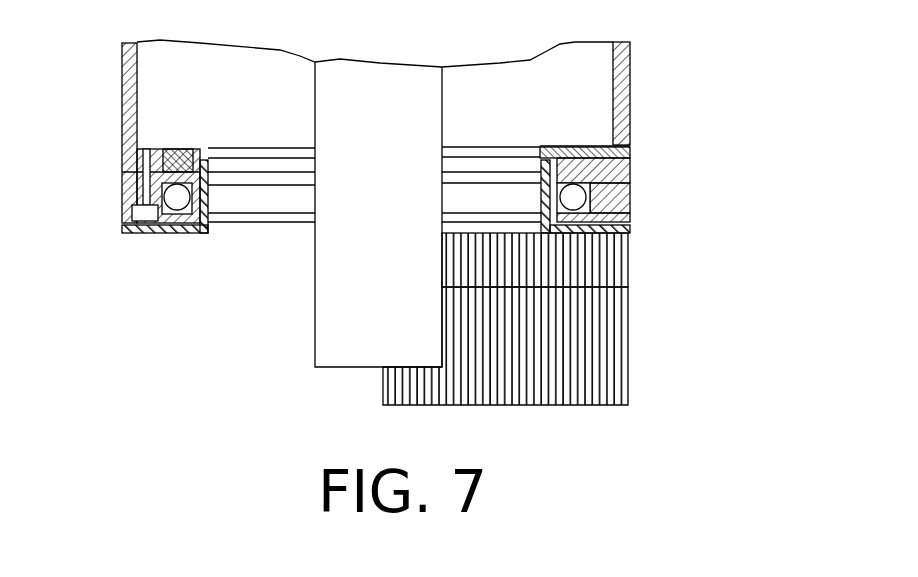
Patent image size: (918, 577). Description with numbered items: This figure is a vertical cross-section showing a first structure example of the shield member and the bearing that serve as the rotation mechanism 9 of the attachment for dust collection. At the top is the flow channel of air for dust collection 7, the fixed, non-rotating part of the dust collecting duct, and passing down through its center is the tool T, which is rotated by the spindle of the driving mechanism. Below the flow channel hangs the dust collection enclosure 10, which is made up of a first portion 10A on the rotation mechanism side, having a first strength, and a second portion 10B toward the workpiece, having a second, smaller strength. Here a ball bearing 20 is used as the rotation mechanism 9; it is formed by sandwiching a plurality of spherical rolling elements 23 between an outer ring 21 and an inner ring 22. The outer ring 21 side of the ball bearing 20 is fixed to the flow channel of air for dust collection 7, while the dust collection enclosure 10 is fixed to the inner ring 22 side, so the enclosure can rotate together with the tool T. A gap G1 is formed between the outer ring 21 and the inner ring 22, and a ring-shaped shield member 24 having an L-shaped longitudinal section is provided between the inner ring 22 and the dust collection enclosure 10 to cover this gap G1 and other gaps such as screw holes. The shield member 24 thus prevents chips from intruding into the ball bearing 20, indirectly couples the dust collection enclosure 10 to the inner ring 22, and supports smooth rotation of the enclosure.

The flow channel of air for dust collection 7 is at (630, 66).
The gap G1 is at (628, 152).
The rotation mechanism 9 is at (121, 228).
The shield member 24 is at (163, 235).
The tool T is at (313, 332).
The ball bearing 20 is at (667, 208).
The outer ring 21 is at (628, 181).
The inner ring 22 is at (717, 145).
The spherical rolling elements 23 is at (577, 198).
The dust collection enclosure 10 is at (601, 319).
The first portion 10A is at (630, 272).
The second portion 10B is at (630, 358).